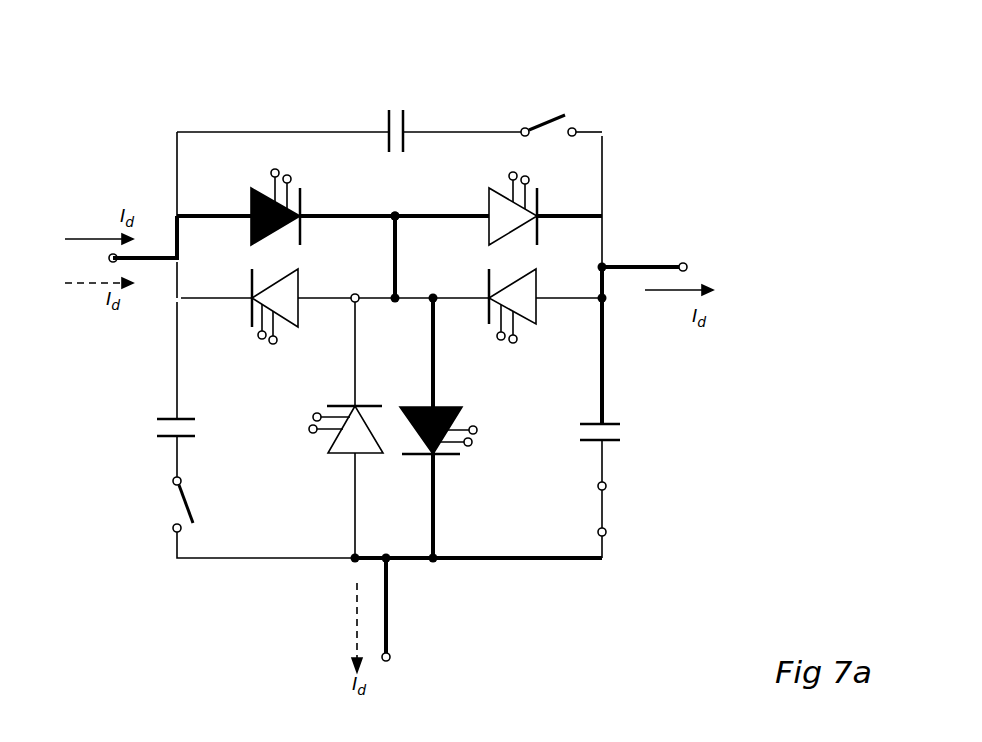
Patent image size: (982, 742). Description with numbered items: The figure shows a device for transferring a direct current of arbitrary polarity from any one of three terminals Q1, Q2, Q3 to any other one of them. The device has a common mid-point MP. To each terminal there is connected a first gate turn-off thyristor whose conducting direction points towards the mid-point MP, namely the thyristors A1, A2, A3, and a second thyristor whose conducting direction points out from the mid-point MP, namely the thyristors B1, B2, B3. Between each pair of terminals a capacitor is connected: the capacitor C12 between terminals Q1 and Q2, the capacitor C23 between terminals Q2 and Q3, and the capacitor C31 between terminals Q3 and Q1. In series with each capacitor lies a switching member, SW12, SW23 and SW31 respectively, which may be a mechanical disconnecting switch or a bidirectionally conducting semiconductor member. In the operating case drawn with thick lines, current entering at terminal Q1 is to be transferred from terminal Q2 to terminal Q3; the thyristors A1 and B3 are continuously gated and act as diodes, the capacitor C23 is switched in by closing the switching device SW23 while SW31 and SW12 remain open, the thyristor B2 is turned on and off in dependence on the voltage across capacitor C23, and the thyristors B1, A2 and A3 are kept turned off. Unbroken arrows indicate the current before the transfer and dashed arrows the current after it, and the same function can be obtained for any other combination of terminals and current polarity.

The first gate turn-off thyristor A1 is at (300, 177).
The second thyristor B1 is at (300, 288).
The first gate turn-off thyristor A2 is at (537, 338).
The second thyristor B2 is at (545, 187).
The first gate turn-off thyristor A3 is at (335, 463).
The second thyristor B3 is at (458, 458).
The capacitor C12 is at (398, 102).
The capacitor C23 is at (643, 433).
The capacitor C31 is at (143, 427).
The switching member SW12 is at (560, 110).
The switching member SW23 is at (620, 520).
The switching member SW31 is at (160, 507).
The mid-point MP is at (403, 203).
The terminal Q1 is at (118, 263).
The terminal Q2 is at (697, 260).
The terminal Q3 is at (395, 660).